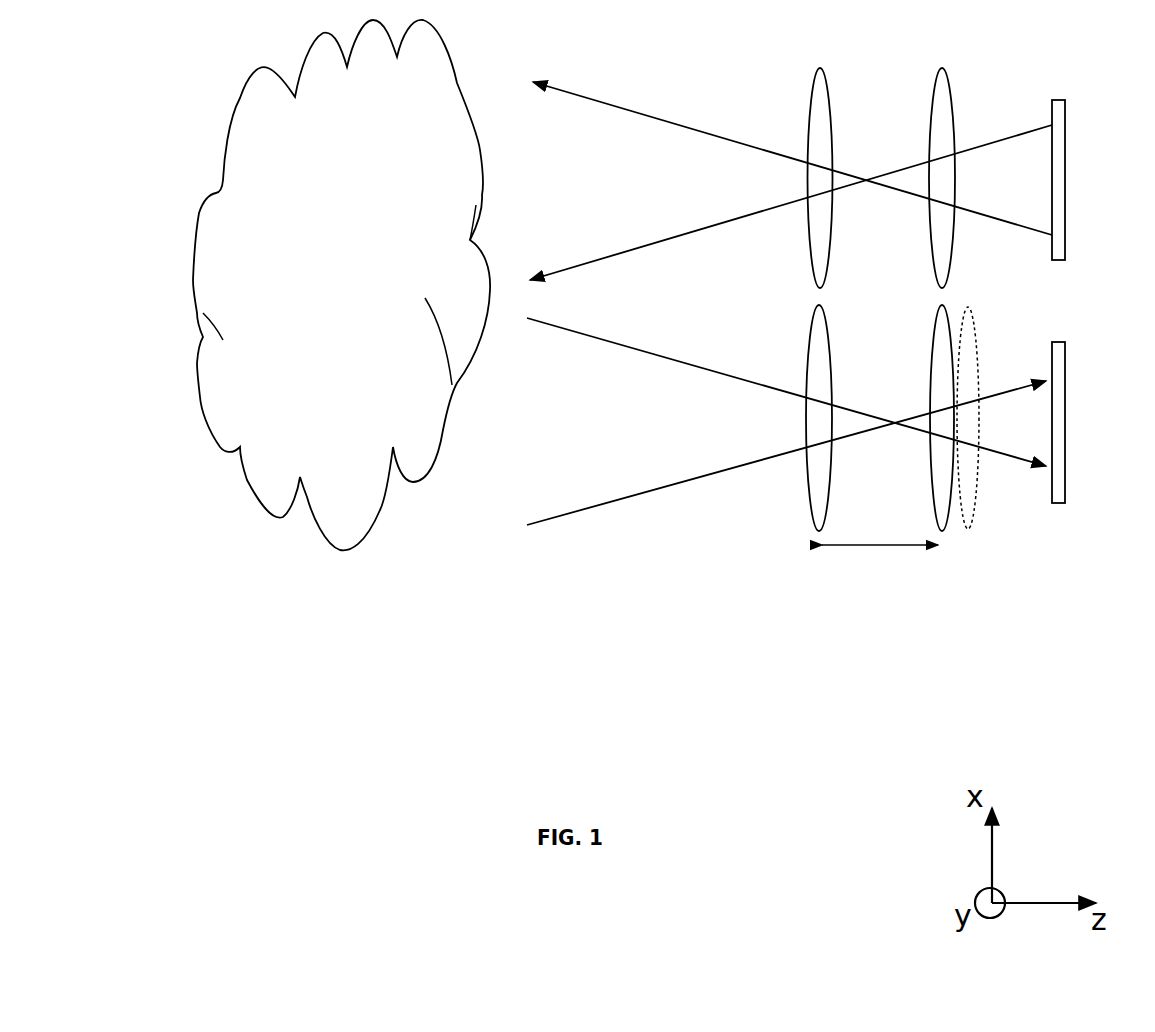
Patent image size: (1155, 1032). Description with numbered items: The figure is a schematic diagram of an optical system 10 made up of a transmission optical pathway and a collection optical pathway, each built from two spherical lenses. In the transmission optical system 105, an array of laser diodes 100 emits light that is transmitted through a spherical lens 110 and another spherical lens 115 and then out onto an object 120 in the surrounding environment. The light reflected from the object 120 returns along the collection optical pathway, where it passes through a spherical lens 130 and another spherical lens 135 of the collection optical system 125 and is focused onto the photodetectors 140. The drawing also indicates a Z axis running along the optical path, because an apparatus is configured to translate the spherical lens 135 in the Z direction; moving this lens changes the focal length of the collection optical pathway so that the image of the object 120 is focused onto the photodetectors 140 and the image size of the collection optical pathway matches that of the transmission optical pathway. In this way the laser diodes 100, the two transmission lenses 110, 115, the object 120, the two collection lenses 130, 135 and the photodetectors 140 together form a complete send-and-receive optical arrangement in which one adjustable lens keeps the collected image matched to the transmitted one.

The sensing system 10 is at (1039, 676).
The array of laser diodes 100 is at (1097, 180).
The transmission optical system 105 is at (798, 147).
The spherical lens 110 is at (969, 178).
The spherical lens 115 is at (848, 178).
The object 120 is at (341, 285).
The collection optical system 125 is at (786, 455).
The spherical lens 130 is at (847, 418).
The spherical lens 135 is at (984, 418).
The photodetectors 140 is at (1096, 422).